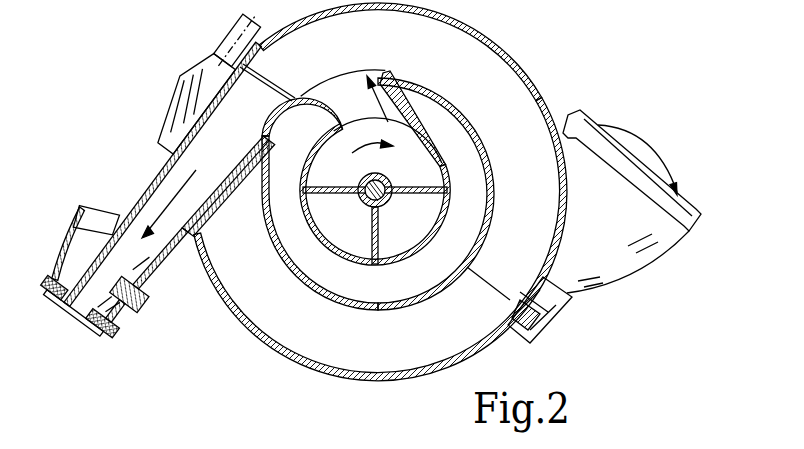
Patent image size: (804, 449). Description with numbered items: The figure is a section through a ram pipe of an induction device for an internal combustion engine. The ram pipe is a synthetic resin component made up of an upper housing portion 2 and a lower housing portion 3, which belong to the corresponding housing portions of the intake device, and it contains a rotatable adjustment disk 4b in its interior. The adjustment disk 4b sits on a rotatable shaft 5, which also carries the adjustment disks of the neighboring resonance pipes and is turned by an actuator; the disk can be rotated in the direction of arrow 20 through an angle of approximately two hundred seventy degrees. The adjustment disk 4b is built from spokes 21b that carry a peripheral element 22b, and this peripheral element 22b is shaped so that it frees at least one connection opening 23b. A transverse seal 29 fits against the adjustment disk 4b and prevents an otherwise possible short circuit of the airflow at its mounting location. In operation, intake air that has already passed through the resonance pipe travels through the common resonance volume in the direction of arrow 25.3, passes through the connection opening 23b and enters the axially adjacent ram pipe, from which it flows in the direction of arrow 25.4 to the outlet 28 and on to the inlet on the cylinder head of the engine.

The upper housing portion 2 is at (478, 55).
The lower housing portion 3 is at (272, 346).
The adjustment disk 4b is at (468, 163).
The shaft 5 is at (386, 200).
The arrow 20 is at (385, 158).
The spokes 21b is at (371, 232).
The peripheral element 22b is at (291, 243).
The connection opening 23b is at (341, 92).
The arrow 25.3 is at (392, 78).
The arrow 25.4 is at (188, 192).
The outlet 28 is at (87, 300).
The transverse seal 29 is at (250, 184).